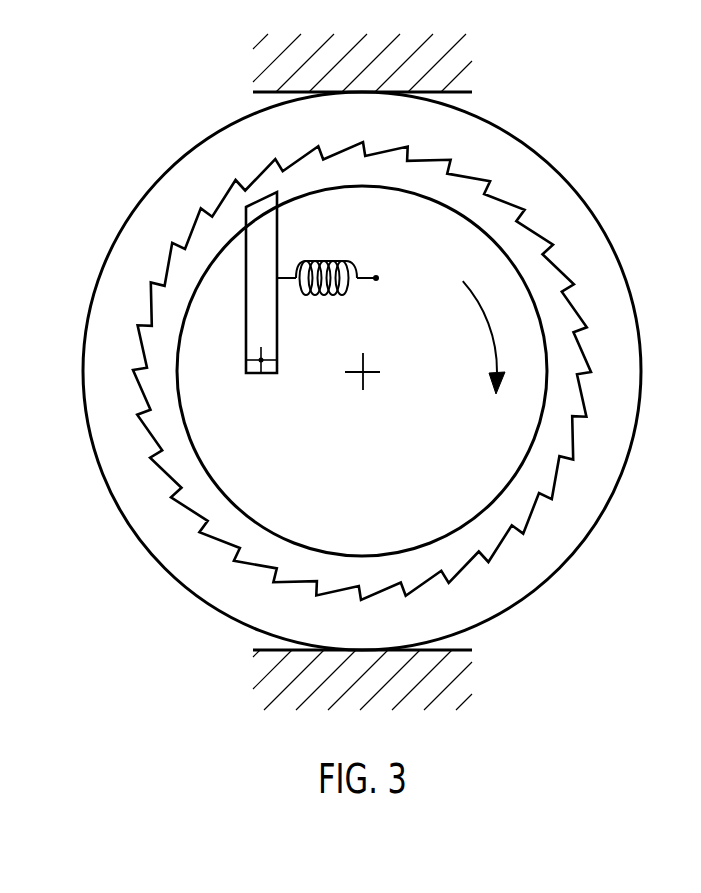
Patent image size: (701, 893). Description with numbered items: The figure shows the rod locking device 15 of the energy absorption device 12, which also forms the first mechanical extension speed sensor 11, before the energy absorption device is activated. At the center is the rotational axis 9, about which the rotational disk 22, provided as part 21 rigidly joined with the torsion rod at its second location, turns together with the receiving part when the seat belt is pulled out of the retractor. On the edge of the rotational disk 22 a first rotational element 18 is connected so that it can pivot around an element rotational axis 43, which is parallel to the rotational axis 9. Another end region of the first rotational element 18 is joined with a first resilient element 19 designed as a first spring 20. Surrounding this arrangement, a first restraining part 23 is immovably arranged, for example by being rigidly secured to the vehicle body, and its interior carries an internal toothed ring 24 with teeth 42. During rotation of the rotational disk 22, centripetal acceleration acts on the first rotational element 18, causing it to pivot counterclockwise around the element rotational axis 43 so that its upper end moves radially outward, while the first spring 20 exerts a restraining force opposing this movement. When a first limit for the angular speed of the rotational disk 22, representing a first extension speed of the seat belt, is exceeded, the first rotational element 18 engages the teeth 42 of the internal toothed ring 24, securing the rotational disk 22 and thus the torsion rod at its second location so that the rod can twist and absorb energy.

The rotational axis 9 is at (367, 371).
The first mechanical extension speed sensor 11 is at (298, 372).
The energy absorption device 12 is at (298, 372).
The rod locking device 15 is at (212, 637).
The first rotational element 18 is at (267, 230).
The first resilient element 19 is at (328, 303).
The first spring 20 is at (332, 296).
The part 21 is at (362, 371).
The rotational disk 22 is at (395, 469).
The first restraining part 23 is at (548, 565).
The internal toothed ring 24 is at (351, 360).
The teeth 42 is at (160, 278).
The element rotational axis 43 is at (262, 374).